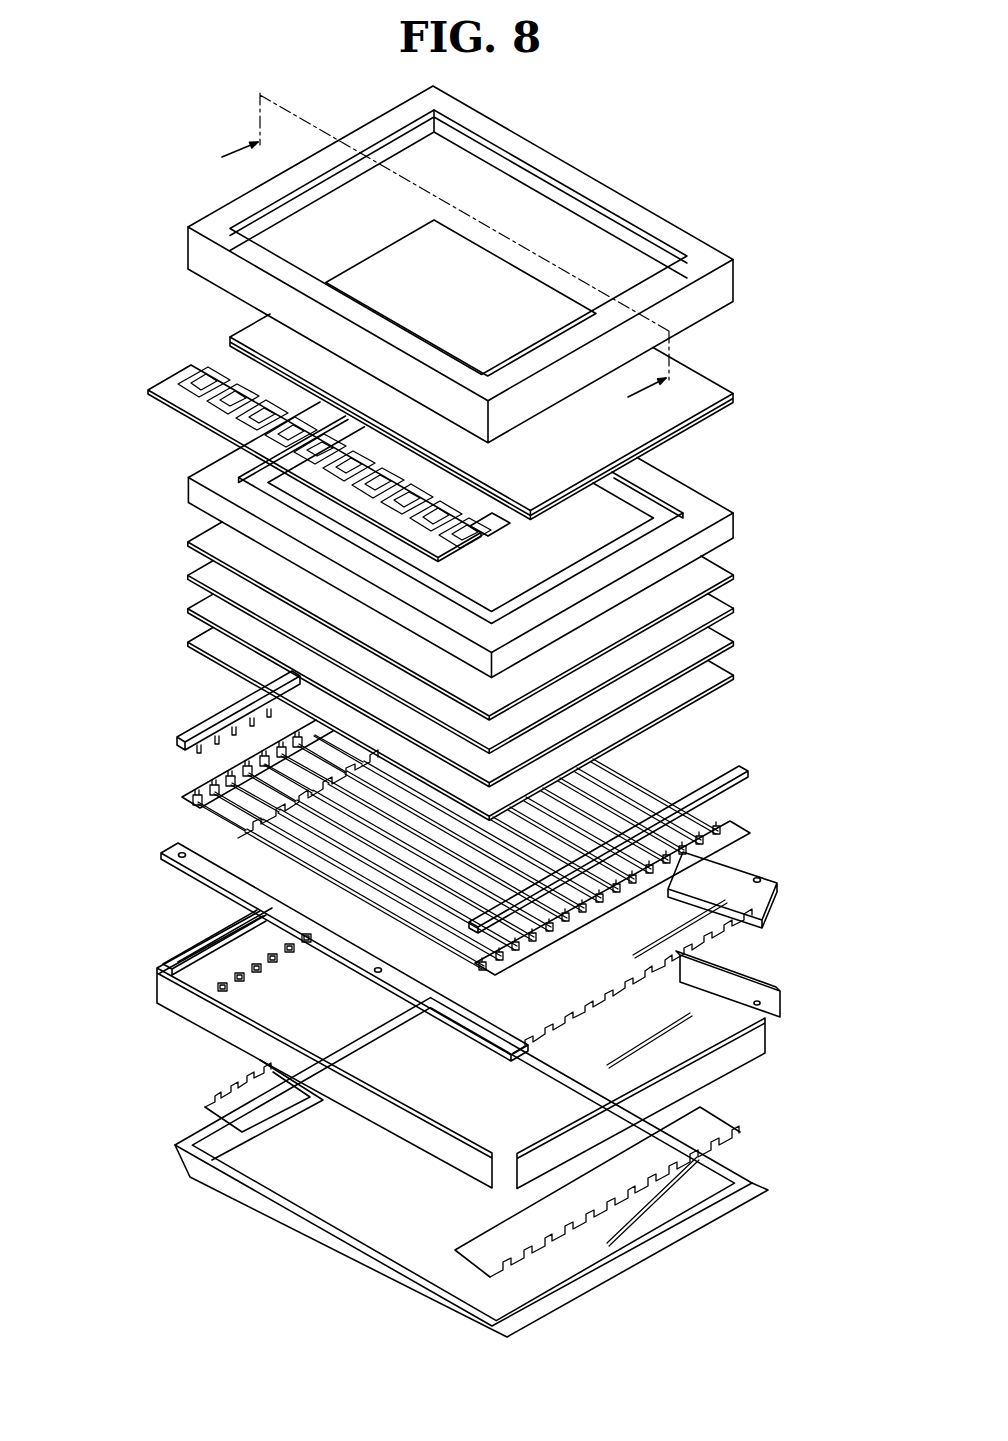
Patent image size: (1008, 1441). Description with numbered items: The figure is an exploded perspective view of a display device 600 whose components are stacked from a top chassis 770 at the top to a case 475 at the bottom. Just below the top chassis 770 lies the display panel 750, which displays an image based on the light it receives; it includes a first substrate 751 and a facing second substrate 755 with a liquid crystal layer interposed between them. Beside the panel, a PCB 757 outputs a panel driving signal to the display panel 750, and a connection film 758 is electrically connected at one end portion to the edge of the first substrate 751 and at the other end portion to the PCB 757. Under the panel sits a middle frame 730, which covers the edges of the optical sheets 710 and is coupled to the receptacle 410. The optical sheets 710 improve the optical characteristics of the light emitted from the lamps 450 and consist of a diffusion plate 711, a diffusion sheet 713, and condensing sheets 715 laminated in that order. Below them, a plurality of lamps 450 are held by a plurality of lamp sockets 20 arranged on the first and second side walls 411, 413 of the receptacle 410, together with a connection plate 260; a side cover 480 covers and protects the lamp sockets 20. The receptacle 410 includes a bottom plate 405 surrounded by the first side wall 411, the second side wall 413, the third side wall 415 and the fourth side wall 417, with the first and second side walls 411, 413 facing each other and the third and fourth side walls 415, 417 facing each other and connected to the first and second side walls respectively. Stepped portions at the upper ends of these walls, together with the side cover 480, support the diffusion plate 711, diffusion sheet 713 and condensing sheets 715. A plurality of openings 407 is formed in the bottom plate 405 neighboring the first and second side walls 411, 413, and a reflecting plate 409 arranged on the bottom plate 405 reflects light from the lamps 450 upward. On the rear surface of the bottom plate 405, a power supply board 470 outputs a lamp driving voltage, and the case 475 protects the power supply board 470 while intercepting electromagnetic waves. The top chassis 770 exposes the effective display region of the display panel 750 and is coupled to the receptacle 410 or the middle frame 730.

The display device 600 is at (641, 150).
The top chassis 770 is at (718, 236).
The display panel 750 is at (86, 387).
The second substrate 755 is at (260, 328).
The first substrate 751 is at (220, 352).
The connection film 758 is at (187, 368).
The PCB 757 is at (167, 385).
The middle frame 730 is at (721, 487).
The optical sheets 710 is at (858, 680).
The condensing sheets 715 is at (713, 573).
The diffusion sheet 713 is at (713, 640).
The diffusion plate 711 is at (713, 675).
The lamps 450 is at (680, 792).
The side cover 480 is at (205, 728).
The lamp sockets 20 is at (752, 833).
The connection plate 260 is at (752, 848).
The second side wall 413 is at (227, 930).
The openings 407 is at (218, 988).
The reflecting plate 409 is at (770, 895).
The fourth side wall 417 is at (777, 970).
The receptacle 410 is at (790, 1005).
The first side wall 411 is at (740, 1038).
The bottom plate 405 is at (683, 1040).
The power supply board 470 is at (222, 1097).
The third side wall 415 is at (420, 1138).
The case 475 is at (450, 1317).